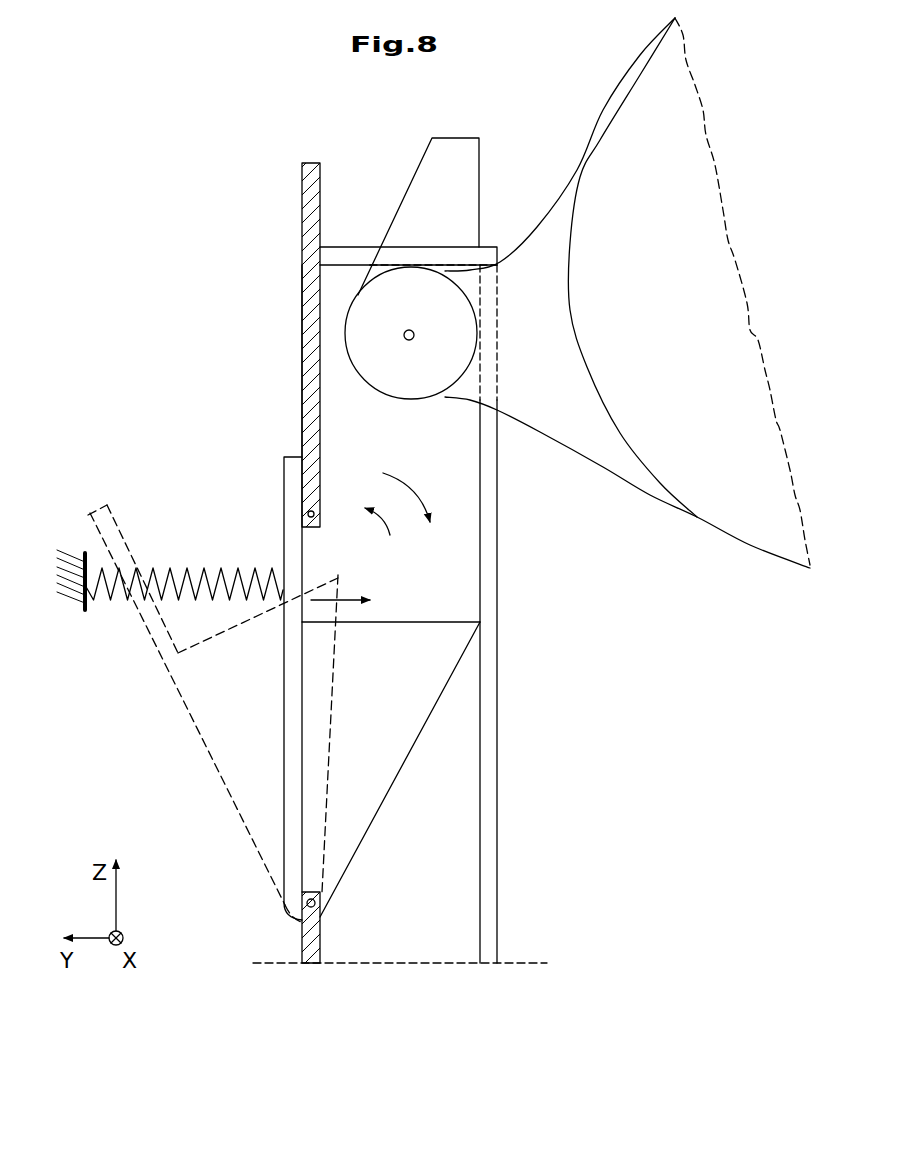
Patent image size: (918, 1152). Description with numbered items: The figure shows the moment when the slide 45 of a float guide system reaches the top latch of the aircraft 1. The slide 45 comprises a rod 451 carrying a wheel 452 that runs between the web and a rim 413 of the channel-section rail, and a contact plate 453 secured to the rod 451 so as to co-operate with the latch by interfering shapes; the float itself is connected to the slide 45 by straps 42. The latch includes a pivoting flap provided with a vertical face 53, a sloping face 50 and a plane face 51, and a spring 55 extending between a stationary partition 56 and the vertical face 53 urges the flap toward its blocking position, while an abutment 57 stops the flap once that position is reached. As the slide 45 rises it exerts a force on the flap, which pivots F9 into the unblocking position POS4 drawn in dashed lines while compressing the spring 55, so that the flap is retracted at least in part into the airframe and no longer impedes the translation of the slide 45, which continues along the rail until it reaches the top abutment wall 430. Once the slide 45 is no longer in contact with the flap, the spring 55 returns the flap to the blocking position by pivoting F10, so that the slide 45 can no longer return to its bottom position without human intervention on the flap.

The abutment 57 is at (284, 473).
The top abutment wall 430 is at (346, 247).
The contact plate 453 is at (418, 216).
The wheel 452 is at (411, 333).
The rod 451 is at (416, 337).
The straps 42 is at (543, 226).
The rim 413 is at (489, 866).
The sloping face 50 is at (427, 725).
The vertical face 53 is at (284, 742).
The unblocking position POS4 is at (205, 750).
The spring 55 is at (120, 593).
The stationary partition 56 is at (72, 600).
The slide 45 is at (433, 413).
The pivoting F10 is at (417, 493).
The pivoting F9 is at (387, 516).
The plane face 51 is at (415, 622).
The aircraft 1 is at (688, 905).